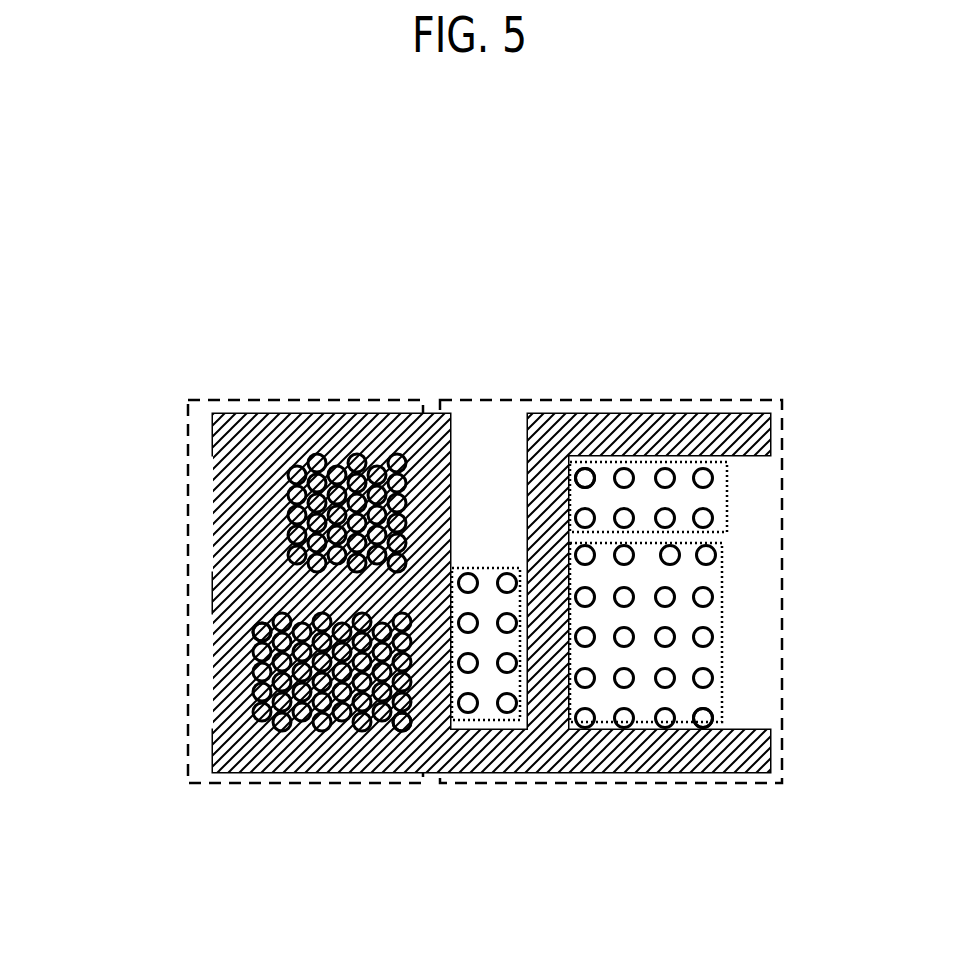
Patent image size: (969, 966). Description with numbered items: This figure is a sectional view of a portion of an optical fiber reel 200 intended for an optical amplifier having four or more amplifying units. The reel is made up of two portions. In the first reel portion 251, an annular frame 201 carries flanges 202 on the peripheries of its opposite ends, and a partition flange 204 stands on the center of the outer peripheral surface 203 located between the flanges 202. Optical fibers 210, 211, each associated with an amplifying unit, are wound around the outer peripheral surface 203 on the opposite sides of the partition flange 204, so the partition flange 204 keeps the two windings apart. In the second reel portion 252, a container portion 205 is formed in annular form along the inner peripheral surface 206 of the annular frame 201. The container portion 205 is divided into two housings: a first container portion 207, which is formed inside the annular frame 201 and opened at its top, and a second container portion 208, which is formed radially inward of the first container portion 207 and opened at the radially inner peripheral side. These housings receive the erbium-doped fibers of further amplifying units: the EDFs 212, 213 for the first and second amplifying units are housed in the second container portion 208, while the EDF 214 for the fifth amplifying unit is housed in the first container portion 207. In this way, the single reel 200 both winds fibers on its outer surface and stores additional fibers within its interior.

The optical fiber reel 200 is at (352, 395).
The annular frame 201 is at (452, 480).
The flanges 202 is at (213, 432).
The outer peripheral surface 203 is at (400, 672).
The partition flange 204 is at (213, 593).
The container portion 205 is at (563, 772).
The inner peripheral surface 206 is at (452, 650).
The first container portion 207 is at (506, 430).
The second container portion 208 is at (755, 658).
The optical fiber 210 is at (265, 497).
The optical fiber 211 is at (232, 666).
The EDF 212 is at (727, 494).
The EDF 213 is at (722, 580).
The EDF 214 is at (510, 772).
The first reel portion 251 is at (222, 783).
The second reel portion 252 is at (713, 783).